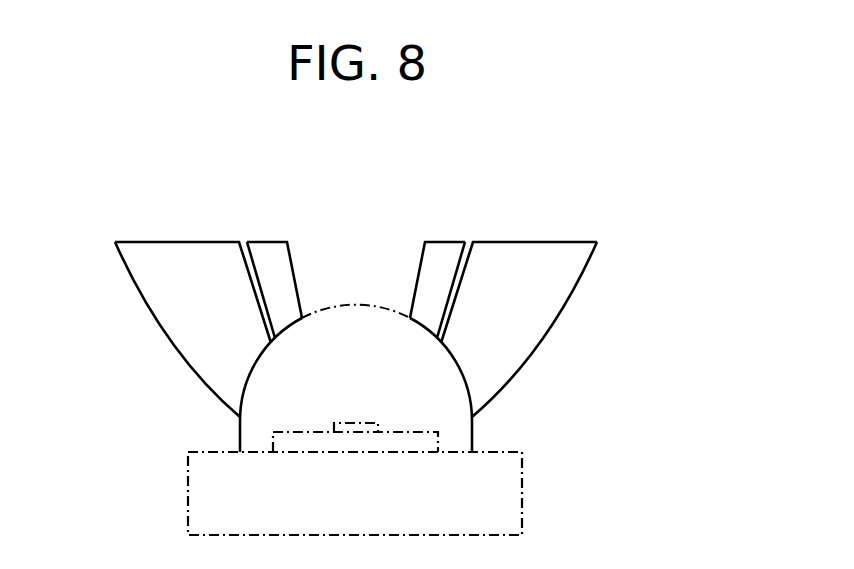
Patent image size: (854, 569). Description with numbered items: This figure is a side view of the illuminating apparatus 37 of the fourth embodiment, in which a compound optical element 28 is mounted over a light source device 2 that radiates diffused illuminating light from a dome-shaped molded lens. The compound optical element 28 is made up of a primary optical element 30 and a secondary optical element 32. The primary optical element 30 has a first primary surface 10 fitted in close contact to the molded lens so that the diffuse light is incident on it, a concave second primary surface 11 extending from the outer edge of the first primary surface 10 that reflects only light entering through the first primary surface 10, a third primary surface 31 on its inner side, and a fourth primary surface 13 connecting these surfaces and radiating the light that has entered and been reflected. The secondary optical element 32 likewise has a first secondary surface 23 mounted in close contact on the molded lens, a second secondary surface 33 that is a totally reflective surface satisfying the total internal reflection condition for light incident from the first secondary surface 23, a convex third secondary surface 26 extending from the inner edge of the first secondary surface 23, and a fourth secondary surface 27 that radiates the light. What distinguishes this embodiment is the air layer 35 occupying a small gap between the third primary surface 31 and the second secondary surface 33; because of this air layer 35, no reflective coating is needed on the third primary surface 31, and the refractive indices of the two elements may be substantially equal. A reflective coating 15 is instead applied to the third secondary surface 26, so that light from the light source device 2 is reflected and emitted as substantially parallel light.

The light source device 2 is at (558, 484).
The primary surface-1 10 is at (239, 425).
The primary surface-2 11 is at (141, 296).
The primary surface-4 13 is at (218, 263).
The reflective coating 15 is at (302, 301).
The secondary surface-1 23 is at (290, 324).
The secondary surface-3 26 is at (295, 278).
The secondary surface-4 27 is at (425, 251).
The compound optical element 28 is at (212, 136).
The primary optical element 30 is at (172, 291).
The primary surface-3 31 is at (252, 266).
The secondary optical element 32 is at (300, 251).
The secondary surface-2 33 is at (452, 296).
The air layer 35 is at (470, 240).
The illuminating apparatus 37 is at (521, 278).